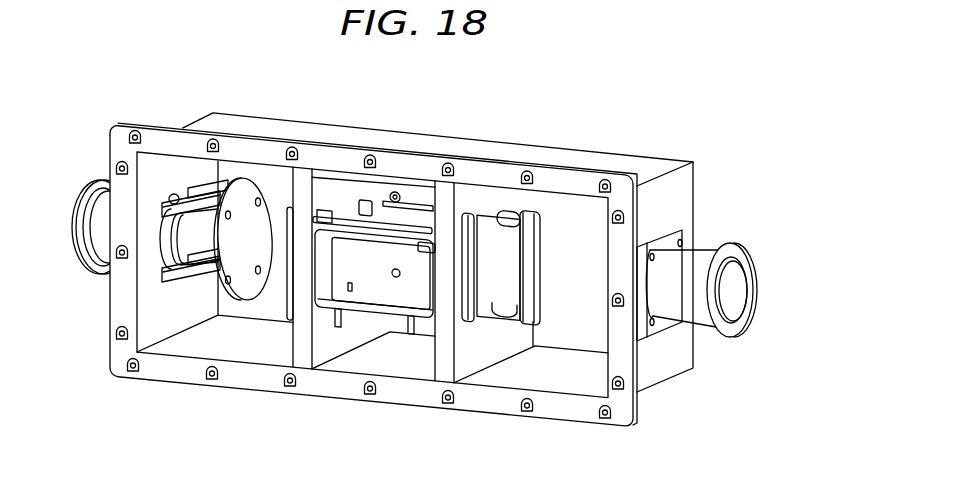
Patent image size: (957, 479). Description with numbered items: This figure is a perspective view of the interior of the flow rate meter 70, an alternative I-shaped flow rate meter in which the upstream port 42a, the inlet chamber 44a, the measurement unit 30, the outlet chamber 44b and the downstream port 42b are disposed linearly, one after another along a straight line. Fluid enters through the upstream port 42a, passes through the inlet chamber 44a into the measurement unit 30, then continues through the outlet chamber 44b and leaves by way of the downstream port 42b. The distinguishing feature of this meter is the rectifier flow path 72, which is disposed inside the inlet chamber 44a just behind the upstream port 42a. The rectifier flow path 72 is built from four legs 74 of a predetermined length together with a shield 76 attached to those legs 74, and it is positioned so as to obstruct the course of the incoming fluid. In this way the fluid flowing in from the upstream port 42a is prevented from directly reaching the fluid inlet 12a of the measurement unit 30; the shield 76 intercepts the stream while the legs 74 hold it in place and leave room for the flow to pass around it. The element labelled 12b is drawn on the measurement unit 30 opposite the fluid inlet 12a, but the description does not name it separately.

The flow rate meter 70 is at (628, 113).
The rectifier flow path 72 is at (208, 299).
The legs 74 is at (163, 207).
The shield 76 is at (245, 195).
The upstream port 42a is at (73, 258).
The downstream port 42b is at (753, 310).
The inlet chamber 44a is at (222, 302).
The outlet chamber 44b is at (572, 293).
The fluid inlet 12a is at (283, 293).
The second bracket module 12b is at (530, 318).
The measurement unit 30 is at (372, 320).